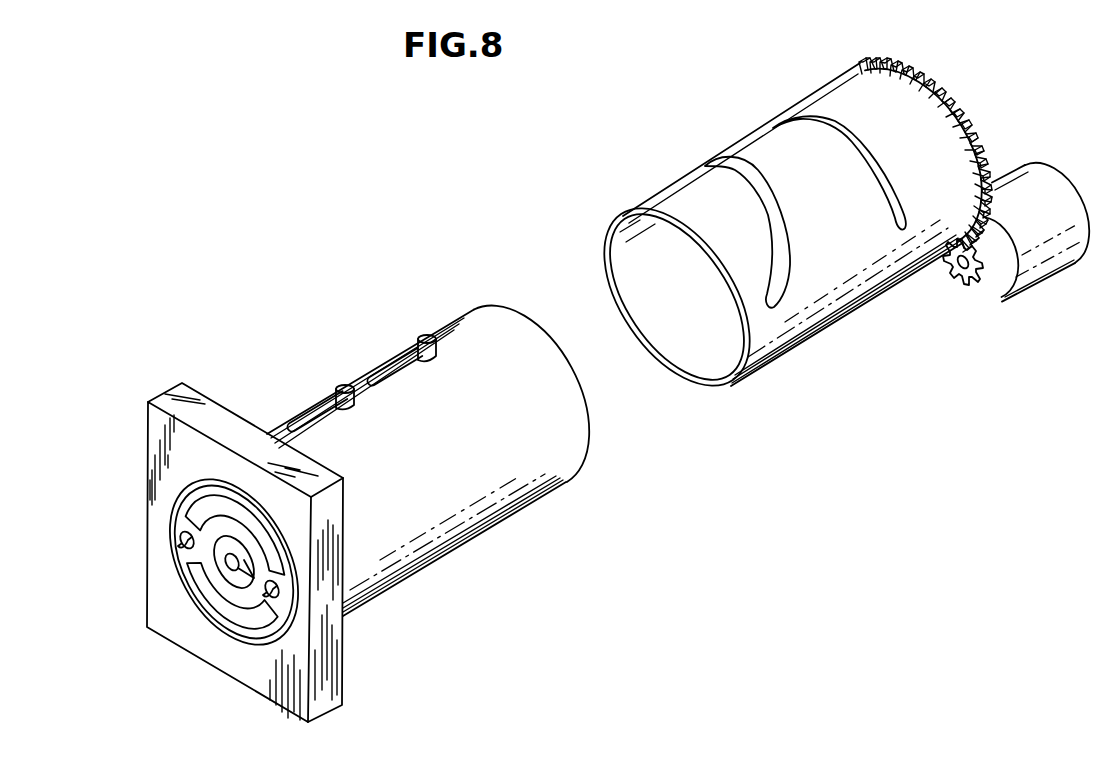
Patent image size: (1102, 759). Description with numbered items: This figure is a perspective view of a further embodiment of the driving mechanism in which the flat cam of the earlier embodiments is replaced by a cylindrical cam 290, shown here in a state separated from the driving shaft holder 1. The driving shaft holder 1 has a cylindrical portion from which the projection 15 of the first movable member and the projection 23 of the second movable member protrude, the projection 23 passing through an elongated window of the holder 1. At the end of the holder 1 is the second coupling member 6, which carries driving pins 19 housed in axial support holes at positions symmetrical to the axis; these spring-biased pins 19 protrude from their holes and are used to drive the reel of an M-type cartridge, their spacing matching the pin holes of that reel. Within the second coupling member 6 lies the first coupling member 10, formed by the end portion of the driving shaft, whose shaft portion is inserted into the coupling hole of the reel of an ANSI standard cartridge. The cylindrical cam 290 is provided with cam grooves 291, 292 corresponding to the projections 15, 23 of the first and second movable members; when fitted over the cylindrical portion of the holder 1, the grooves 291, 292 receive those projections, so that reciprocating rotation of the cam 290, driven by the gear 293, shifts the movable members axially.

The driving shaft holder 1 is at (487, 515).
The second coupling member 6 is at (186, 508).
The first coupling member 10 is at (230, 561).
The projection 15 is at (428, 335).
The driving pin 19 is at (180, 542).
The projection 23 is at (345, 385).
The cylindrical cam 290 is at (889, 297).
The cam groove 291 is at (798, 120).
The cam groove 292 is at (727, 165).
The gear 293 is at (984, 282).